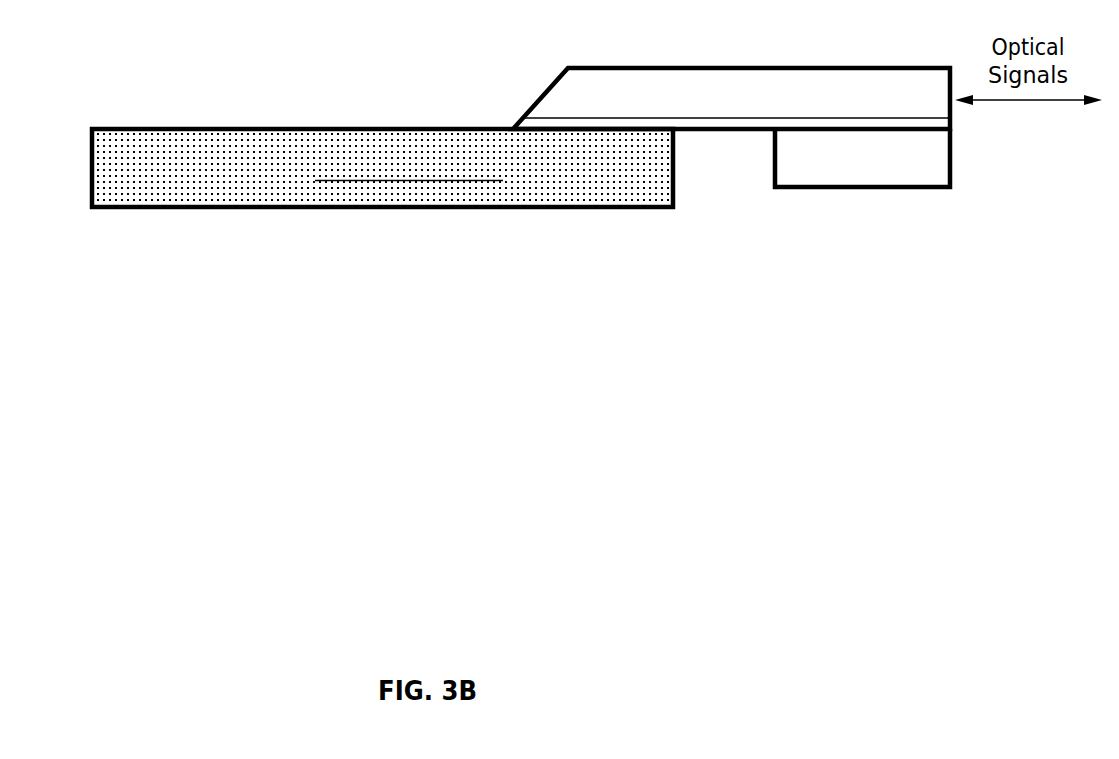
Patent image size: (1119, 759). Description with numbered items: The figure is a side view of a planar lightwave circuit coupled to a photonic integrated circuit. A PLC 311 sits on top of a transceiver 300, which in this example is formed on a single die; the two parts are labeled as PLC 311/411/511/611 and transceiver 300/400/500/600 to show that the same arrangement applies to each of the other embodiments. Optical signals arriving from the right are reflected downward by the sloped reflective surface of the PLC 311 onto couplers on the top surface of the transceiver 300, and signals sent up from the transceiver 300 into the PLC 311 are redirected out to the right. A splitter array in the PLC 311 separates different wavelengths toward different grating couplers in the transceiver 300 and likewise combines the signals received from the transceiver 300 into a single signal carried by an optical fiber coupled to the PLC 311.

The transceiver 300 is at (382, 168).
The transceiver 400 is at (382, 168).
The transceiver 500 is at (382, 168).
The transceiver 600 is at (382, 168).
The planar lightwave circuit (PLC) 311 is at (710, 107).
The planar lightwave circuit (PLC) 411 is at (758, 107).
The planar lightwave circuit (PLC) 511 is at (806, 107).
The planar lightwave circuit (PLC) 611 is at (857, 107).